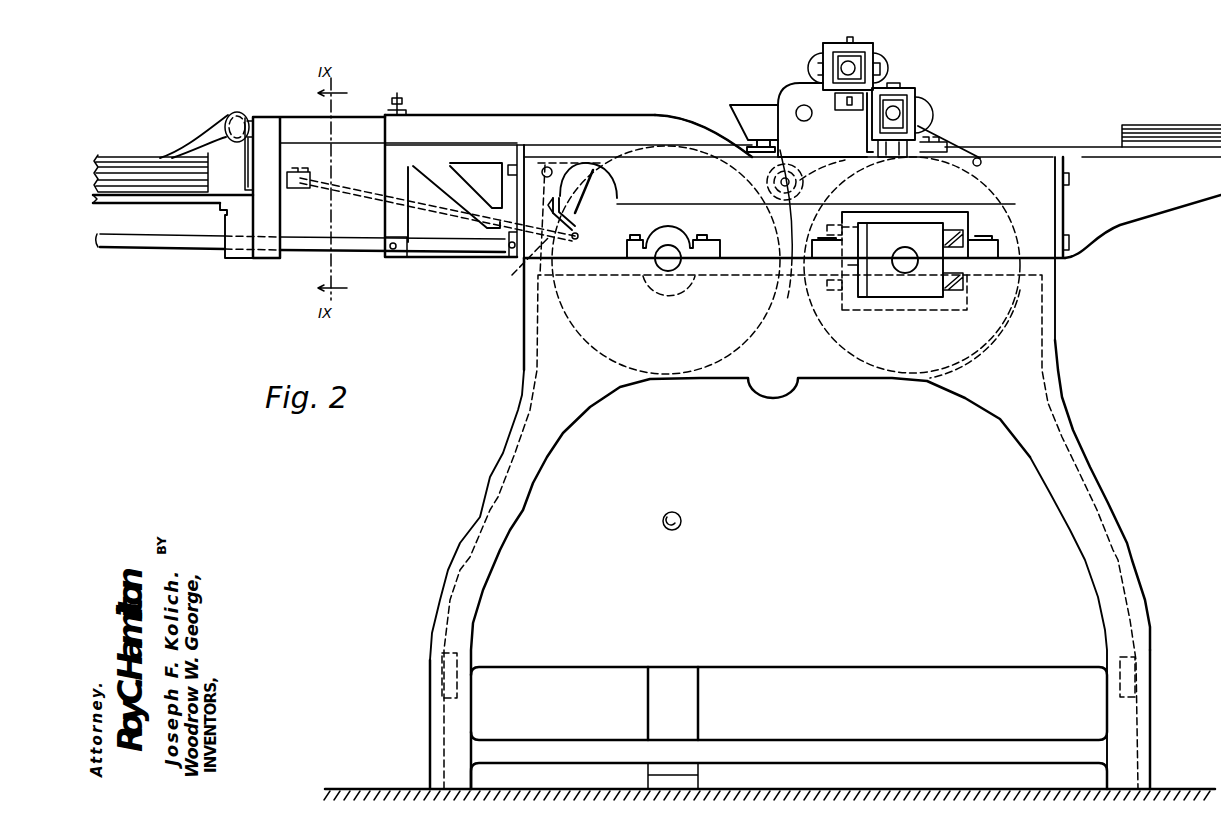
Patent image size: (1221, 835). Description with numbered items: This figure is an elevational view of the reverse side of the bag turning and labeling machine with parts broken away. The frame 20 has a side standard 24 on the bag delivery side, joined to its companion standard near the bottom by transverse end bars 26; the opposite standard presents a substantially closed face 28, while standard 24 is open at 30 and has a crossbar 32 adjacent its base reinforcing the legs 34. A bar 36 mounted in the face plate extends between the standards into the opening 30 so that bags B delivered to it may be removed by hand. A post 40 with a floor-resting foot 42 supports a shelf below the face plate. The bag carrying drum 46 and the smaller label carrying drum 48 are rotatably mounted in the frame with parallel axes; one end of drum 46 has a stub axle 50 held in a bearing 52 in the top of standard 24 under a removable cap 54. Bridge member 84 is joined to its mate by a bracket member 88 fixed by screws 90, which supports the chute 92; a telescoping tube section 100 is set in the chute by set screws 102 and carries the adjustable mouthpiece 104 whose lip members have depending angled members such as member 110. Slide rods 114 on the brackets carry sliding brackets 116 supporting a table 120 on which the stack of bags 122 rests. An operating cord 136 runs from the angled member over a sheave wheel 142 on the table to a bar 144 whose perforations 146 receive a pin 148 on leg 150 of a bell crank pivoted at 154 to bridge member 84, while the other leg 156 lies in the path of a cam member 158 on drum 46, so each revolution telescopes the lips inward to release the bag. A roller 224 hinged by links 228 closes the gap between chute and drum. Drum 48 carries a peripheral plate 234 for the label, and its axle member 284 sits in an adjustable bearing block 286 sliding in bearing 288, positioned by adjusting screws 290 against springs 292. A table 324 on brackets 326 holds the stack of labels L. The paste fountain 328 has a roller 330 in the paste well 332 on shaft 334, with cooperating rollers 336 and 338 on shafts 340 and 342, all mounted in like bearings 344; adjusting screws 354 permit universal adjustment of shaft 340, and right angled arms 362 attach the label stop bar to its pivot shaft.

The frame 20 is at (513, 407).
The side standard 24 is at (1057, 336).
The transverse end bar 26 is at (442, 684).
The closed face 28 is at (789, 583).
The opening 30 is at (522, 503).
The crossbar 32 is at (918, 742).
The legs 34 is at (433, 599).
The bar 36 is at (678, 527).
The post 40 is at (690, 701).
The foot 42 is at (683, 783).
The bag carrying drum 46 is at (603, 369).
The label carrying drum 48 is at (797, 232).
The stub axle 50 is at (678, 267).
The bearing 52 is at (653, 283).
The removable cap 54 is at (691, 242).
The bridge member 84 is at (794, 207).
The bracket member 88 is at (453, 150).
The screws 90 is at (514, 158).
The chute 92 is at (548, 115).
The telescoping tube section 100 is at (359, 120).
The set screws 102 is at (404, 94).
The adjustable mouthpiece 104 is at (248, 112).
The angled member 110 is at (249, 188).
The slide rods 114 is at (142, 240).
The sliding brackets 116 is at (243, 248).
The table 120 is at (198, 200).
The stack of bags 122 is at (106, 180).
The operating cord 136 is at (343, 193).
The sheave wheel 142 is at (310, 178).
The bar 144 is at (573, 230).
The perforations 146 is at (577, 240).
The pin 148 is at (518, 225).
The leg 150 is at (553, 197).
The pivot 154 is at (547, 167).
The leg 156 is at (603, 167).
The cam member 158 is at (603, 192).
The roller 224 is at (773, 183).
The links 228 is at (746, 157).
The peripheral plate 234 is at (969, 367).
The axle member 284 is at (905, 265).
The adjustable bearing block 286 is at (928, 233).
The bearing 288 is at (858, 266).
The adjusting screws 290 is at (836, 225).
The springs 292 is at (948, 227).
The table 324 is at (1148, 157).
The brackets 326 is at (1146, 210).
The paste fountain 328 is at (848, 51).
The roller 330 is at (791, 87).
The paste well 332 is at (736, 104).
The shaft 334 is at (803, 105).
The roller 336 is at (863, 42).
The roller 338 is at (925, 113).
The shaft 340 is at (850, 68).
The shaft 342 is at (900, 113).
The bearings 344 is at (840, 148).
The adjusting screws 354 is at (877, 68).
The right angled arms 362 is at (948, 145).
The bag B is at (185, 147).
The labels L is at (1181, 125).